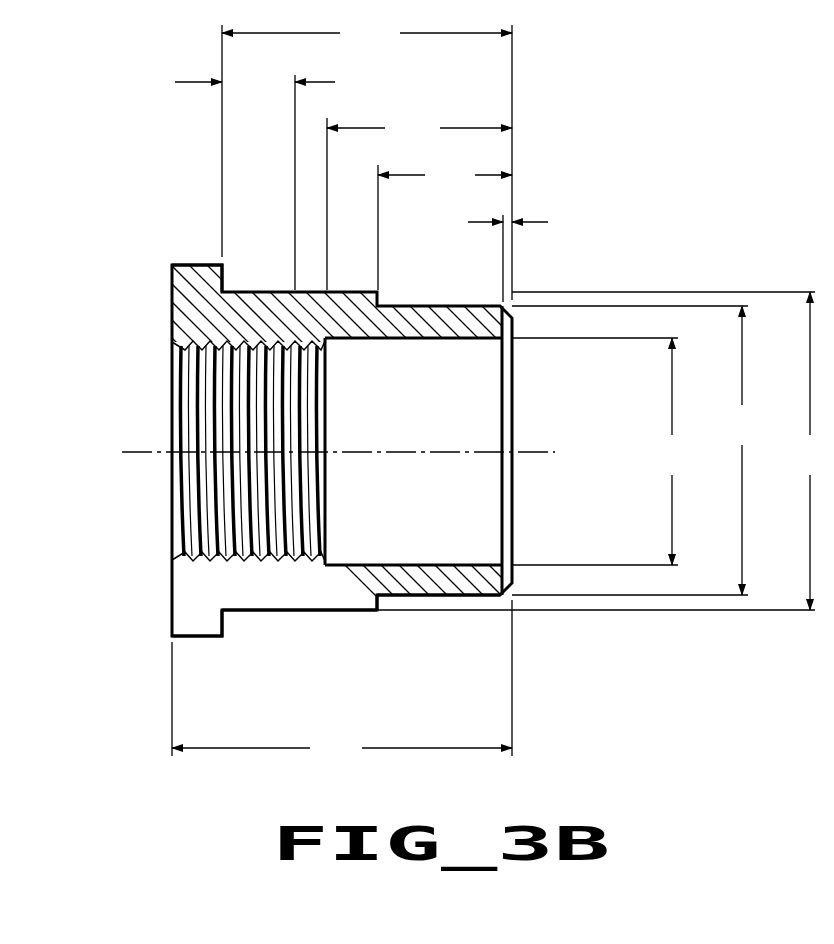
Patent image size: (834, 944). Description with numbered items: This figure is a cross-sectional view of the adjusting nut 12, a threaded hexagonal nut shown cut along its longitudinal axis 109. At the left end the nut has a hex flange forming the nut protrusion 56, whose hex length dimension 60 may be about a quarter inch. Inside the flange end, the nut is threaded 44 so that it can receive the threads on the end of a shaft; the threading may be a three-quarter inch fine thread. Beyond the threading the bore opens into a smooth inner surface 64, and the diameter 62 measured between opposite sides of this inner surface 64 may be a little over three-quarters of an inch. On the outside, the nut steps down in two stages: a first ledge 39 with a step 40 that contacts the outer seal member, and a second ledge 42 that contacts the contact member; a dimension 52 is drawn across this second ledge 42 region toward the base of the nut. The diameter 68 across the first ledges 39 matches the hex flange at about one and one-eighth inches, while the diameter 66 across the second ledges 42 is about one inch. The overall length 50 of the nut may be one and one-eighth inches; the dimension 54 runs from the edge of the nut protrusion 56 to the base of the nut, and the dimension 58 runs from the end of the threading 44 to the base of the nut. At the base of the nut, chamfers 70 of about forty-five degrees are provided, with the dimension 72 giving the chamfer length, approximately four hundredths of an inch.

The adjusting nut 12 is at (592, 162).
The first ledge 39 is at (283, 611).
The step 40 is at (380, 612).
The second ledge 42 is at (454, 596).
The threading 44 is at (190, 412).
The length 50 is at (342, 682).
The reduced portion length 52 is at (445, 225).
The dimension 54 is at (367, 159).
The nut protrusion 56 is at (202, 265).
The dimension 58 is at (419, 202).
The hex length dimension 60 is at (255, 179).
The diameter 62 is at (600, 451).
The inner surface 64 is at (398, 339).
The diameter 66 is at (635, 450).
The diameter 68 is at (602, 451).
The chamfer 70 is at (514, 562).
The dimension 72 is at (531, 255).
The longitudinal axis 109 is at (524, 452).